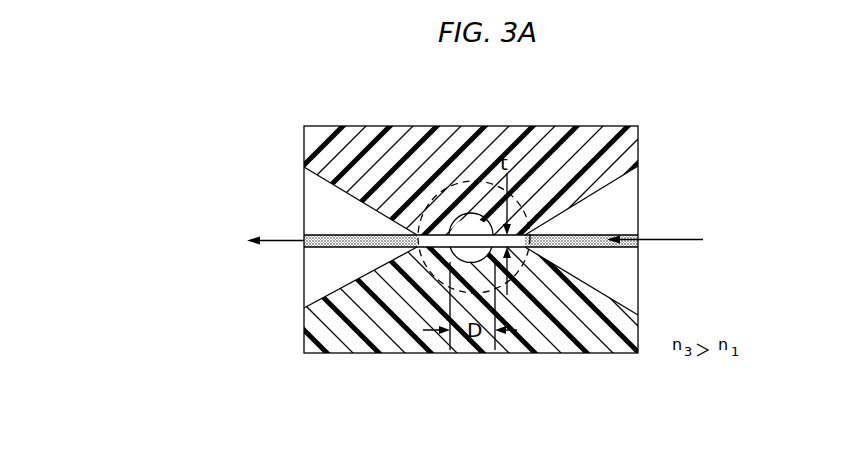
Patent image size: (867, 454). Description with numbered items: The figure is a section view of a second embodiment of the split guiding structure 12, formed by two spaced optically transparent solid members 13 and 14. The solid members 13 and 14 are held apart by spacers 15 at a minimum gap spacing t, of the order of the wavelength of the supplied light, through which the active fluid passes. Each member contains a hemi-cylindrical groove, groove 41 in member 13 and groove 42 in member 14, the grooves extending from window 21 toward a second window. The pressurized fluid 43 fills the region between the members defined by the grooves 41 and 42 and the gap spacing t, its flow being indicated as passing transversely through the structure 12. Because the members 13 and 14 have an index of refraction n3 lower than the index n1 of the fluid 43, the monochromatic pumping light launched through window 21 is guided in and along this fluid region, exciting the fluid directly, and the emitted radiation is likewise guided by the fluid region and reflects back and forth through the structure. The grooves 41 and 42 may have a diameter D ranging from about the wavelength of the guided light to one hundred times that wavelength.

The split guiding structure 12 is at (537, 406).
The optically transparent solid member 13 is at (583, 138).
The optically transparent solid member 14 is at (588, 334).
The spacer 15 is at (670, 268).
The window 21 is at (484, 181).
The hemi-cylindrical groove 41 is at (463, 225).
The hemi-cylindrical groove 42 is at (465, 255).
The fluid 43 is at (725, 195).